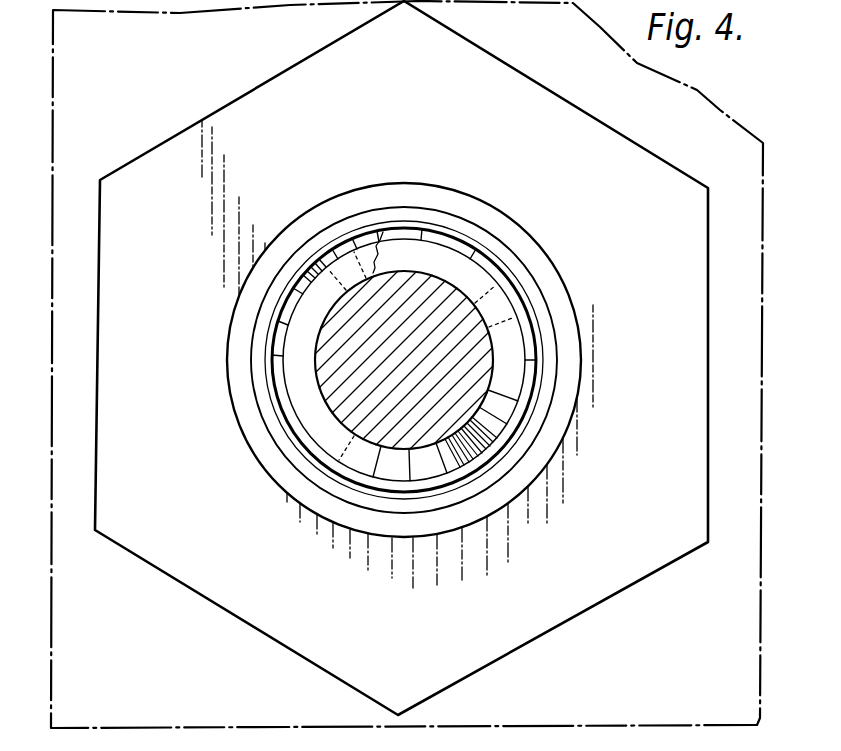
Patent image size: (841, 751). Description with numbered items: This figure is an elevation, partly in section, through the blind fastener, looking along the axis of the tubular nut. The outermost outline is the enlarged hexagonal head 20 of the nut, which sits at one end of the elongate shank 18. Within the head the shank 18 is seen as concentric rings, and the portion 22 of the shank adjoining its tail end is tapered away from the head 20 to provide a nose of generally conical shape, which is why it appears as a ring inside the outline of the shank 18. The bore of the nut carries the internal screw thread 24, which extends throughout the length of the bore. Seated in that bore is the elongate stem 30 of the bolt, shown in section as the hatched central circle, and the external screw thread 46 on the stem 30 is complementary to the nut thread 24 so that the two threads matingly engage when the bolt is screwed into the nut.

The elongate shank 18 is at (515, 223).
The enlarged hexagonal head 20 is at (535, 97).
The tapered portion of the shank 22 is at (533, 463).
The internal screw thread 24 is at (497, 453).
The elongate stem 30 is at (480, 367).
The external screw thread 46 is at (503, 323).